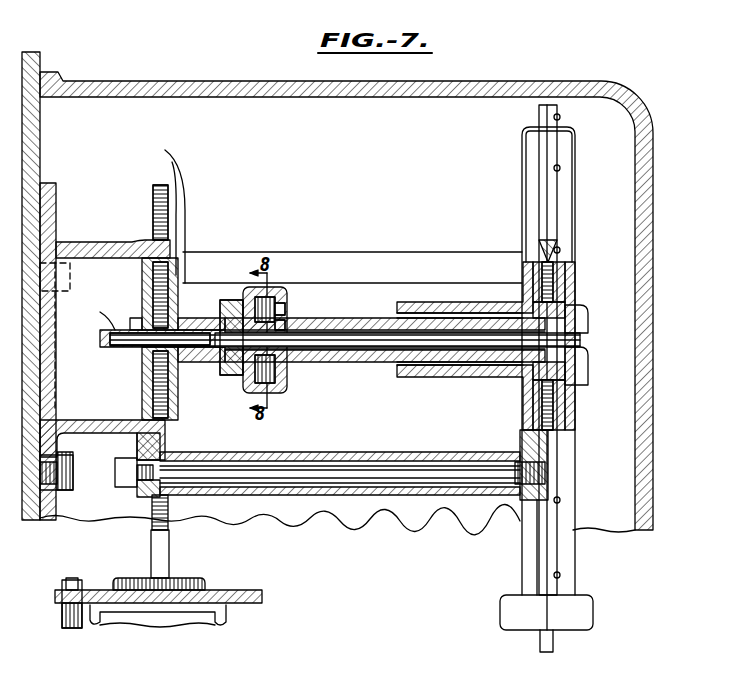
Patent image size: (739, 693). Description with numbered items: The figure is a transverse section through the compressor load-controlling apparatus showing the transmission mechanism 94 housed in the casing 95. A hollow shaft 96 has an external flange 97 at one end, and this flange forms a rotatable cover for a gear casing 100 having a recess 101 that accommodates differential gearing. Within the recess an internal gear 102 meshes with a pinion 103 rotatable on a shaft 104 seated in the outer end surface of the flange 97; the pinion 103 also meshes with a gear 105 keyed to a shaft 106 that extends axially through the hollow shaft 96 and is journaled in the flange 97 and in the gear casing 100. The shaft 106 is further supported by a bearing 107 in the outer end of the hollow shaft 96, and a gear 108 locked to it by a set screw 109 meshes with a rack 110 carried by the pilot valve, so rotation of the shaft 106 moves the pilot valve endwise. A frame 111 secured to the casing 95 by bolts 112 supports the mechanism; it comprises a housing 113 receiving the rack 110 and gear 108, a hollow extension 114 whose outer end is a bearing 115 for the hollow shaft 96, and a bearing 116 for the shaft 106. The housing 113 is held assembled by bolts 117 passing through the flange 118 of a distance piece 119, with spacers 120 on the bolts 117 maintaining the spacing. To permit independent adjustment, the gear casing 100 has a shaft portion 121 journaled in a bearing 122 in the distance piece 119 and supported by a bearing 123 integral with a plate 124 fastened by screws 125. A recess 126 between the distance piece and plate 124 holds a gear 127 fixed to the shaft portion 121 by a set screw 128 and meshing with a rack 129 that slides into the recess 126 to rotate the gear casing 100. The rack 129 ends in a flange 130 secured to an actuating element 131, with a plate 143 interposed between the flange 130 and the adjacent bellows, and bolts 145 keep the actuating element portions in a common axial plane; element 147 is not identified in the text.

The casing 95 is at (544, 82).
The hollow shaft 96 is at (390, 312).
The external flange 97 is at (288, 382).
The transmission mechanism 94 is at (346, 362).
The gear casing 100 is at (242, 285).
The recess 101 is at (240, 305).
The internal gear 102 is at (268, 296).
The pinion 103 is at (285, 300).
The shaft 104 is at (287, 318).
The gear 105 is at (288, 330).
The shaft 106 is at (360, 330).
The bearing 107 is at (570, 308).
The gear 108 is at (570, 386).
The set screw 109 is at (580, 315).
The rack 110 is at (565, 270).
The frame 111 is at (575, 208).
The bolts 112 is at (68, 252).
The housing 113 is at (575, 168).
The hollow extension 114 is at (428, 378).
The bearing 115 is at (402, 370).
The bearing 116 is at (588, 358).
The bolts 117 is at (368, 496).
The flange 118 is at (148, 450).
The distance piece 119 is at (90, 426).
The spacers 120 is at (430, 496).
The shaft portion 121 is at (193, 334).
The bearing 122 is at (105, 318).
The bearing 123 is at (195, 365).
The plate 124 is at (182, 190).
The screws 125 is at (163, 180).
The recess 126 is at (155, 380).
The gear 127 is at (135, 278).
The set screw 128 is at (142, 320).
The rack 129 is at (152, 200).
The flange 130 is at (188, 578).
The actuating element 131 is at (222, 620).
The plate 143 is at (248, 590).
The bolts 145 is at (66, 612).
The bolt head 147 is at (66, 582).